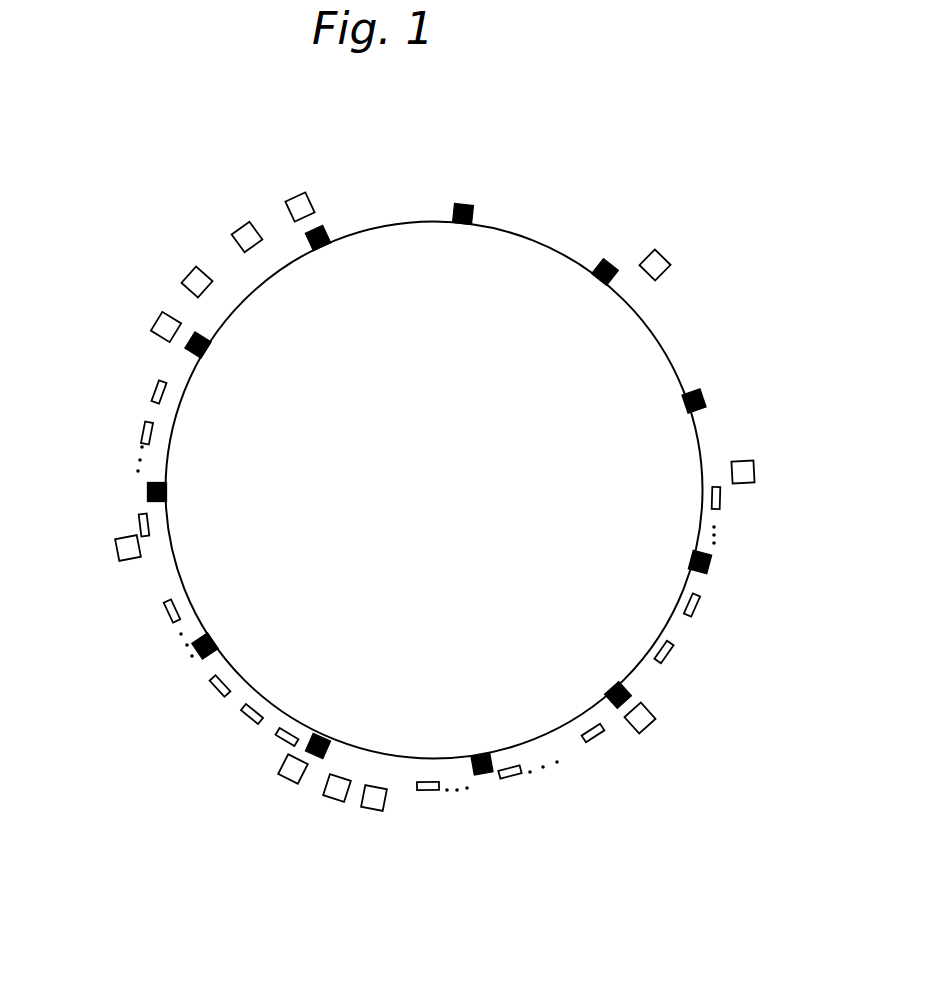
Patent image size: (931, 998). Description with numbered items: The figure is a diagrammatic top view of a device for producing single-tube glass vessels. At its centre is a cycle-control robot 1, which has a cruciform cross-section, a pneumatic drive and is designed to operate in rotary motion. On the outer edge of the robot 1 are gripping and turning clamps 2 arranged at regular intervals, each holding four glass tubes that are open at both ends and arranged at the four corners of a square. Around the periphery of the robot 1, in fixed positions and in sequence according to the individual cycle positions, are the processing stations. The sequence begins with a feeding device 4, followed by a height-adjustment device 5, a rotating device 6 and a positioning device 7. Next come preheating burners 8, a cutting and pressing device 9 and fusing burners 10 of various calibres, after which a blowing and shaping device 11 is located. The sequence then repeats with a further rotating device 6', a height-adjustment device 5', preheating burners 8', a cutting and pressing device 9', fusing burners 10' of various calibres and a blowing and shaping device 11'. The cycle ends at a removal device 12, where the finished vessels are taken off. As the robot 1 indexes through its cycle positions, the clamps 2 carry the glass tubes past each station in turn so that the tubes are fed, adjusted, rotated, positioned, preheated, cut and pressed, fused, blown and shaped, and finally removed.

The cycle-control robot 1 is at (520, 297).
The gripping and turning clamps 2 is at (468, 203).
The feeding device 4 is at (300, 207).
The height-adjustment device 5 is at (222, 209).
The rotating device 6 is at (166, 261).
The positioning device 7 is at (166, 327).
The preheating burners 8 is at (99, 419).
The cutting and pressing device 9 is at (93, 574).
The fusing burners 10 is at (164, 712).
The sensor 11 is at (266, 807).
The removal device 12 is at (655, 265).
The height-adjustment device 5' is at (385, 847).
The rotating device 6' is at (328, 836).
The preheating burners 8' is at (552, 818).
The cutting and pressing device 9' is at (681, 737).
The fusing burners 10' is at (750, 618).
The blowing and shaping device 11' is at (789, 455).